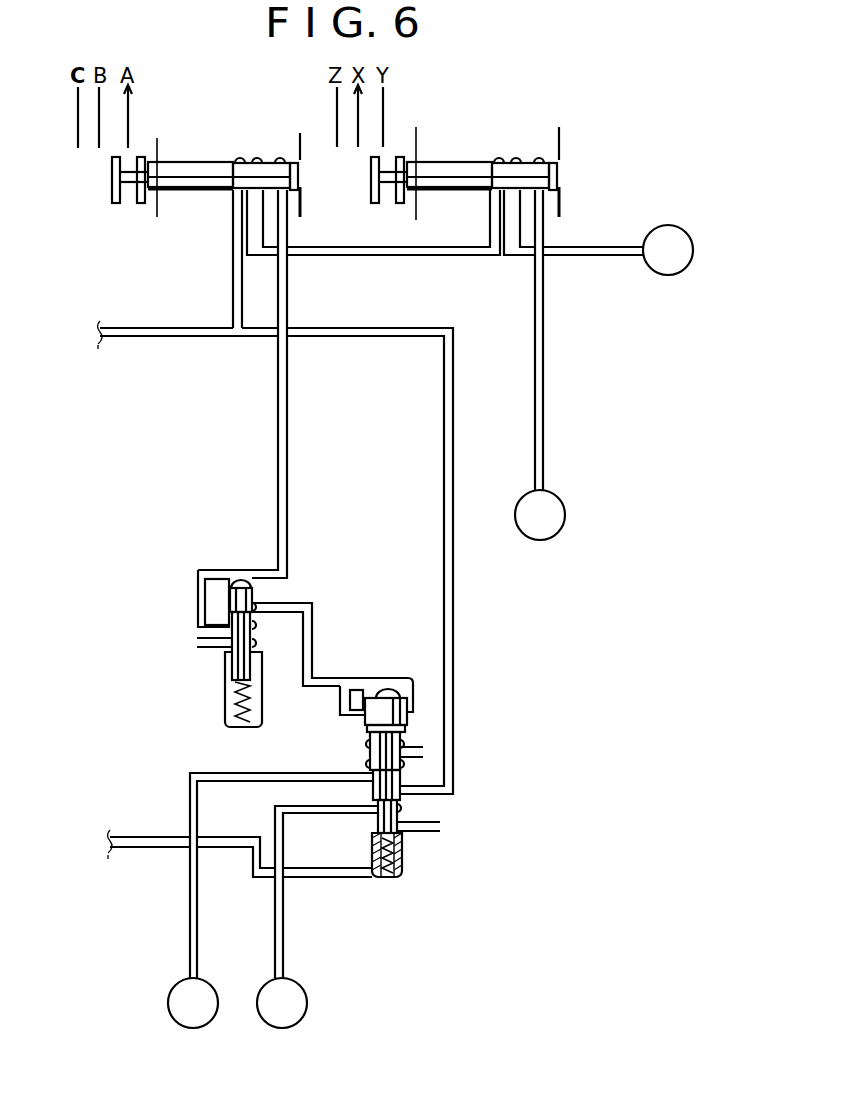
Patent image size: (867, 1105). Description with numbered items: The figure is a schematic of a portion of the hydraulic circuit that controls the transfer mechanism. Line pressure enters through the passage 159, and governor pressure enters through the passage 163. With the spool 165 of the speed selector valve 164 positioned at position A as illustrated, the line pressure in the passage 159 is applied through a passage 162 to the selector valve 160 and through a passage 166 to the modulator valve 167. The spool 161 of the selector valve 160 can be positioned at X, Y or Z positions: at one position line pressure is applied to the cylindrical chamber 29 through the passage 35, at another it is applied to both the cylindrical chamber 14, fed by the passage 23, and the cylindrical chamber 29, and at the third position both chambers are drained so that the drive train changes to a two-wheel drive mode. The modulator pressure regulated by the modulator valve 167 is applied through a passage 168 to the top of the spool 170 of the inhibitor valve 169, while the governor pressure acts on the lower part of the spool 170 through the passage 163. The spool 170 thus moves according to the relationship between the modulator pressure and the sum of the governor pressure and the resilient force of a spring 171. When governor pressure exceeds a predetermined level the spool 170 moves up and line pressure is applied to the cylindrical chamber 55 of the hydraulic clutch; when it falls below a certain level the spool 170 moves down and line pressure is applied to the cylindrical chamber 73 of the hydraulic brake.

The cylindrical chamber 14 is at (553, 513).
The passage 23 is at (545, 370).
The cylindrical chamber 29 is at (675, 225).
The passage 35 is at (617, 243).
The cylindrical chamber 55 is at (274, 980).
The cylindrical chamber 73 is at (182, 988).
The passage 159 is at (190, 342).
The selector valve 160 is at (463, 136).
The spool 161 is at (476, 165).
The passage 162 is at (372, 257).
The passage 163 is at (167, 838).
The speed selector valve 164 is at (186, 142).
The spool 165 is at (207, 165).
The passage 166 is at (290, 315).
The modulator valve 167 is at (232, 560).
The passage 168 is at (295, 603).
The inhibitor valve 169 is at (387, 673).
The spool 170 is at (397, 817).
The spring 171 is at (389, 878).